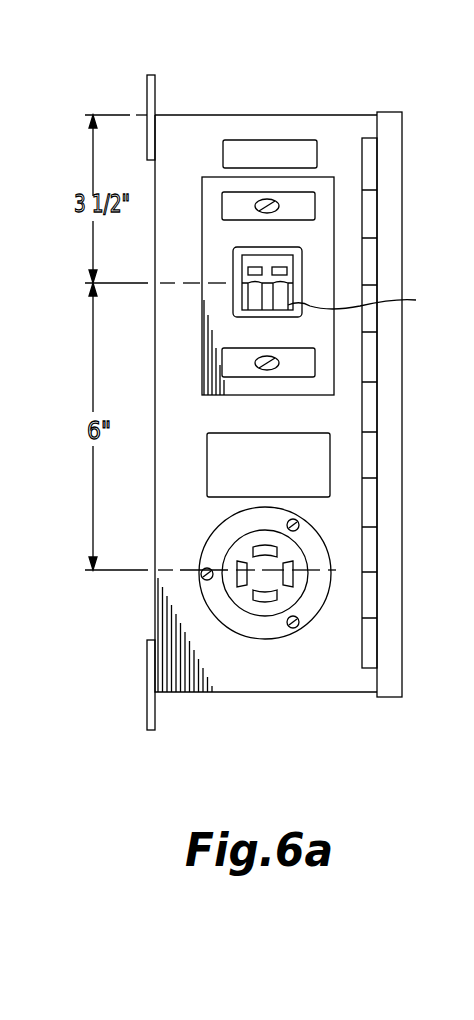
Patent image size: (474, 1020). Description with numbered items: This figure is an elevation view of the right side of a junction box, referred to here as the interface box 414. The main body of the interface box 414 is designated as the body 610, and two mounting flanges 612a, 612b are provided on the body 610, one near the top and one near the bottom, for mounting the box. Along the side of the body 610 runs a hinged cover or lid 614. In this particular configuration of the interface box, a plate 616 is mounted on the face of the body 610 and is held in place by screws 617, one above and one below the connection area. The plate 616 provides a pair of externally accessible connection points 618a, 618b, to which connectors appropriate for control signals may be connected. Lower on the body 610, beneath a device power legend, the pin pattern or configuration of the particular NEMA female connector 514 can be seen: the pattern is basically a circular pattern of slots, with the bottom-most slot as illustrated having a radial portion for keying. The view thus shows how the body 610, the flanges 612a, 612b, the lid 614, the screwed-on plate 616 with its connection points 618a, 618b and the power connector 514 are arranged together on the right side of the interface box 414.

The interface box 414 is at (254, 415).
The body of the interface box 610 is at (348, 113).
The mounting flange 612a is at (157, 104).
The mounting flange 612b is at (146, 705).
The hinged cover or lid 614 is at (403, 178).
The plate 616 is at (334, 266).
The screws 617 is at (258, 205).
The externally accessible connection point 618a is at (242, 312).
The externally accessible connection point 618b is at (377, 309).
The NEMA female connector 514 is at (332, 565).